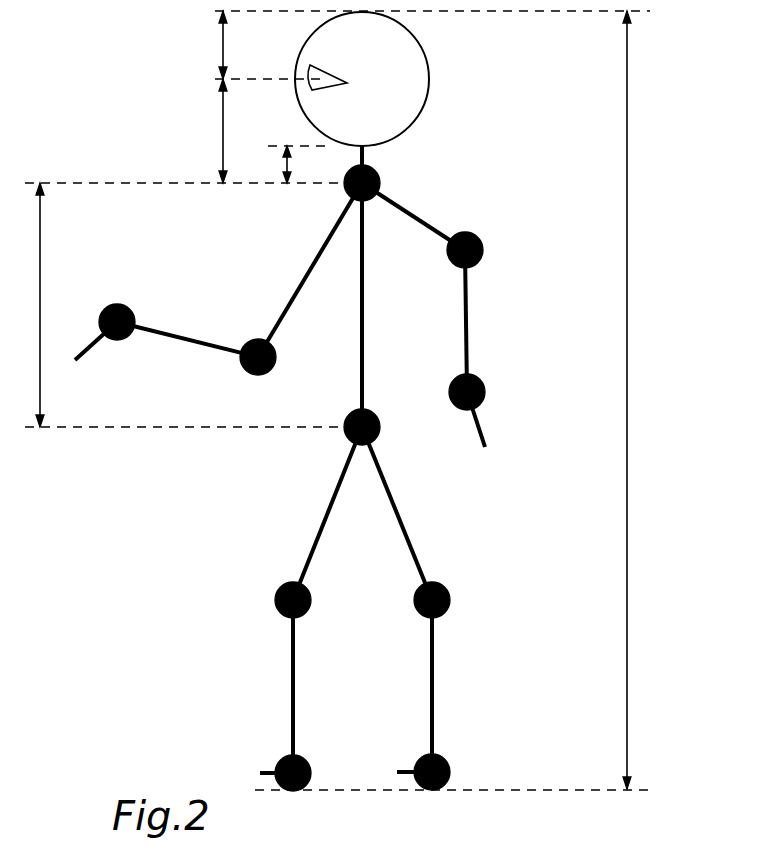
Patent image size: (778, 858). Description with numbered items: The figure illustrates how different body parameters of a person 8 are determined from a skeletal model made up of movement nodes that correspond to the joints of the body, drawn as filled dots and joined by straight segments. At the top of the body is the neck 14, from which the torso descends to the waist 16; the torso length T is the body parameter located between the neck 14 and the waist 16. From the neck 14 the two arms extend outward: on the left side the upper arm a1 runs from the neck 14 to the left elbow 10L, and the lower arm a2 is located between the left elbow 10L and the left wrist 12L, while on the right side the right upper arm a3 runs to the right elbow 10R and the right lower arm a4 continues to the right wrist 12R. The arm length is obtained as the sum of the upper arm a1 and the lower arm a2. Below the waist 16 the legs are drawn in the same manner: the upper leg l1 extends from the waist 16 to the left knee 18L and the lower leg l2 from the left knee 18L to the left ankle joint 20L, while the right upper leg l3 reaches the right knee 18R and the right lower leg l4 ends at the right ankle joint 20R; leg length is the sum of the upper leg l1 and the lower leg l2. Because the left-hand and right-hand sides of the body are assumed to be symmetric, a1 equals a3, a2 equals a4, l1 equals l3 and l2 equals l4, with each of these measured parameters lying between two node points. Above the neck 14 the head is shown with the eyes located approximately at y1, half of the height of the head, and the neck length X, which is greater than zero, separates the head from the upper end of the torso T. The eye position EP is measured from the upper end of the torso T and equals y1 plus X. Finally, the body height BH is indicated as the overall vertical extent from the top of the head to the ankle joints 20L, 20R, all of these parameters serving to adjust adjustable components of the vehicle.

The person 8 is at (462, 76).
The neck 14 is at (383, 177).
The left elbow 10L is at (250, 339).
The right elbow 10R is at (473, 232).
The left wrist 12L is at (117, 306).
The right wrist 12R is at (449, 390).
The waist 16 is at (380, 432).
The left knee 18L is at (276, 605).
The right knee 18R is at (451, 603).
The left ankle joint 20L is at (310, 769).
The right ankle joint 20R is at (450, 766).
The upper arm a1 is at (318, 260).
The lower arm a2 is at (172, 336).
The right upper arm a3 is at (401, 210).
The right lower arm a4 is at (467, 310).
The upper leg l1 is at (330, 508).
The lower leg l2 is at (291, 684).
The right upper leg l3 is at (398, 508).
The right lower leg l4 is at (430, 668).
The eye height within head y1 is at (208, 45).
The eye position EP is at (206, 131).
The neck length X is at (276, 164).
The torso length T is at (38, 290).
The body height BH is at (646, 400).